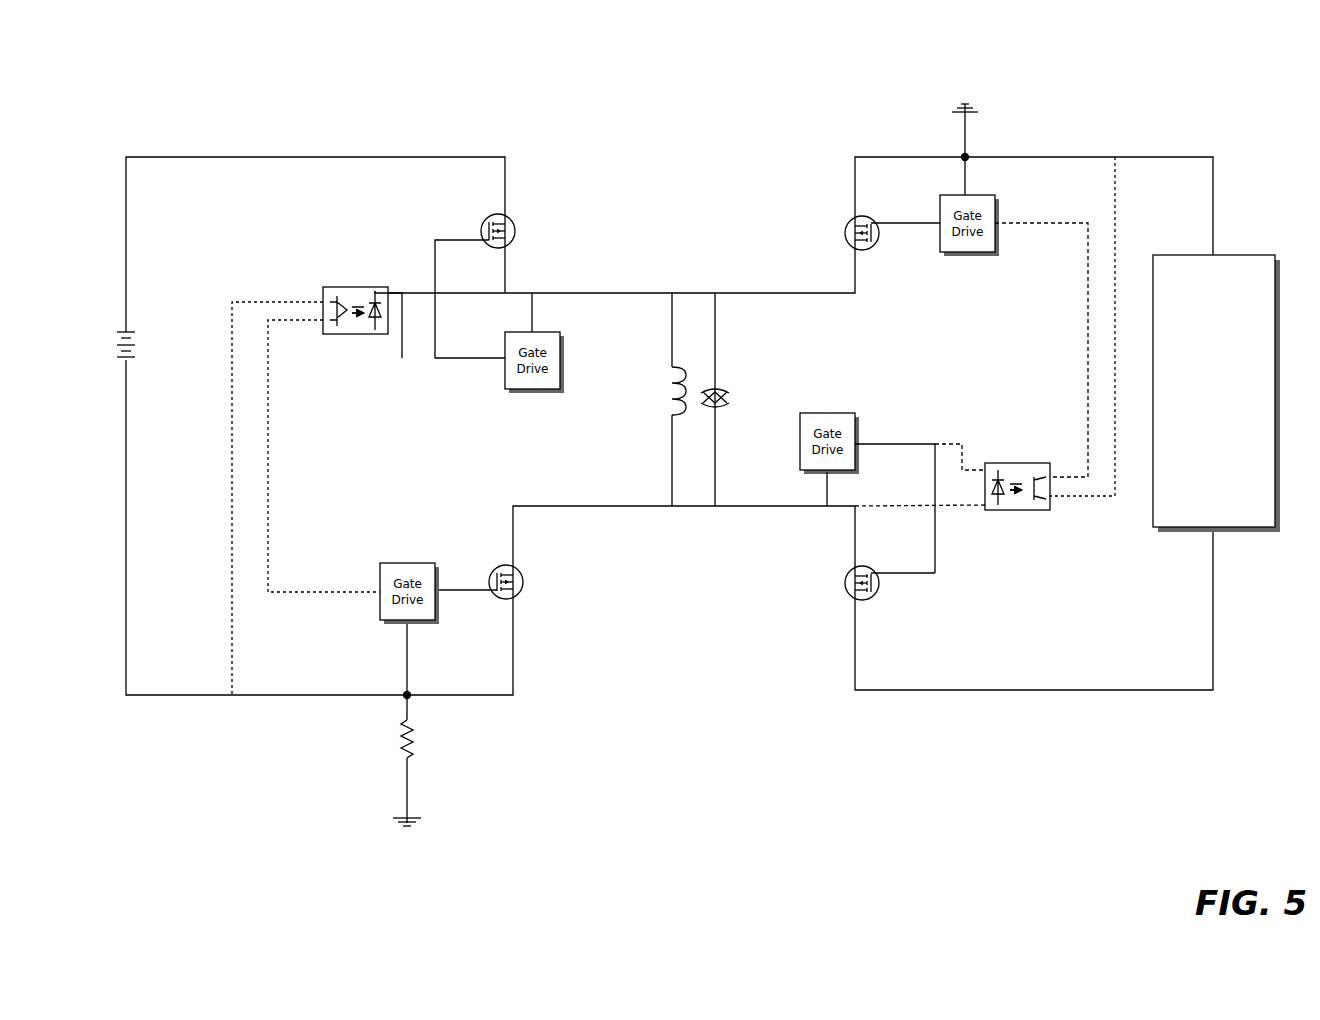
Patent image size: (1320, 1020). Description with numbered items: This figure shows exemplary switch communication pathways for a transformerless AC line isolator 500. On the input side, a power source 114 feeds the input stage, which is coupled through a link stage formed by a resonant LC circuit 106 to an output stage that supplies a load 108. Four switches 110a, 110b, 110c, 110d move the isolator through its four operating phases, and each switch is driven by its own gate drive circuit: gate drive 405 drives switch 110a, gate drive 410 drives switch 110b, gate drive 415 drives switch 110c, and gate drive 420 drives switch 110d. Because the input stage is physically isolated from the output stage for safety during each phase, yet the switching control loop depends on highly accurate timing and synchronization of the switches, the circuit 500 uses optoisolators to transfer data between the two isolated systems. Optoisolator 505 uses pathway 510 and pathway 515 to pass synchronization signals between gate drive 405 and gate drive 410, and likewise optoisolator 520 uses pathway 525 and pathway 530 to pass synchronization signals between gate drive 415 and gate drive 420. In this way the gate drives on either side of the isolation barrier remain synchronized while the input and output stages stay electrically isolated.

The transformerless AC line isolator 500 is at (205, 112).
The power source 114 is at (150, 345).
The switch 110a is at (490, 212).
The switch 110b is at (505, 602).
The switch 110c is at (845, 212).
The switch 110d is at (868, 605).
The gate drive circuit 405 is at (522, 332).
The gate drive circuit 410 is at (398, 560).
The gate drive circuit 415 is at (950, 185).
The gate drive circuit 420 is at (830, 400).
The resonant LC circuit 106 is at (695, 358).
The optoisolator 505 is at (340, 275).
The optoisolator 520 is at (1020, 440).
The pathway 510 is at (248, 290).
The pathway 515 is at (285, 478).
The pathway 525 is at (1068, 213).
The pathway 530 is at (1100, 502).
The load 108 is at (1195, 250).